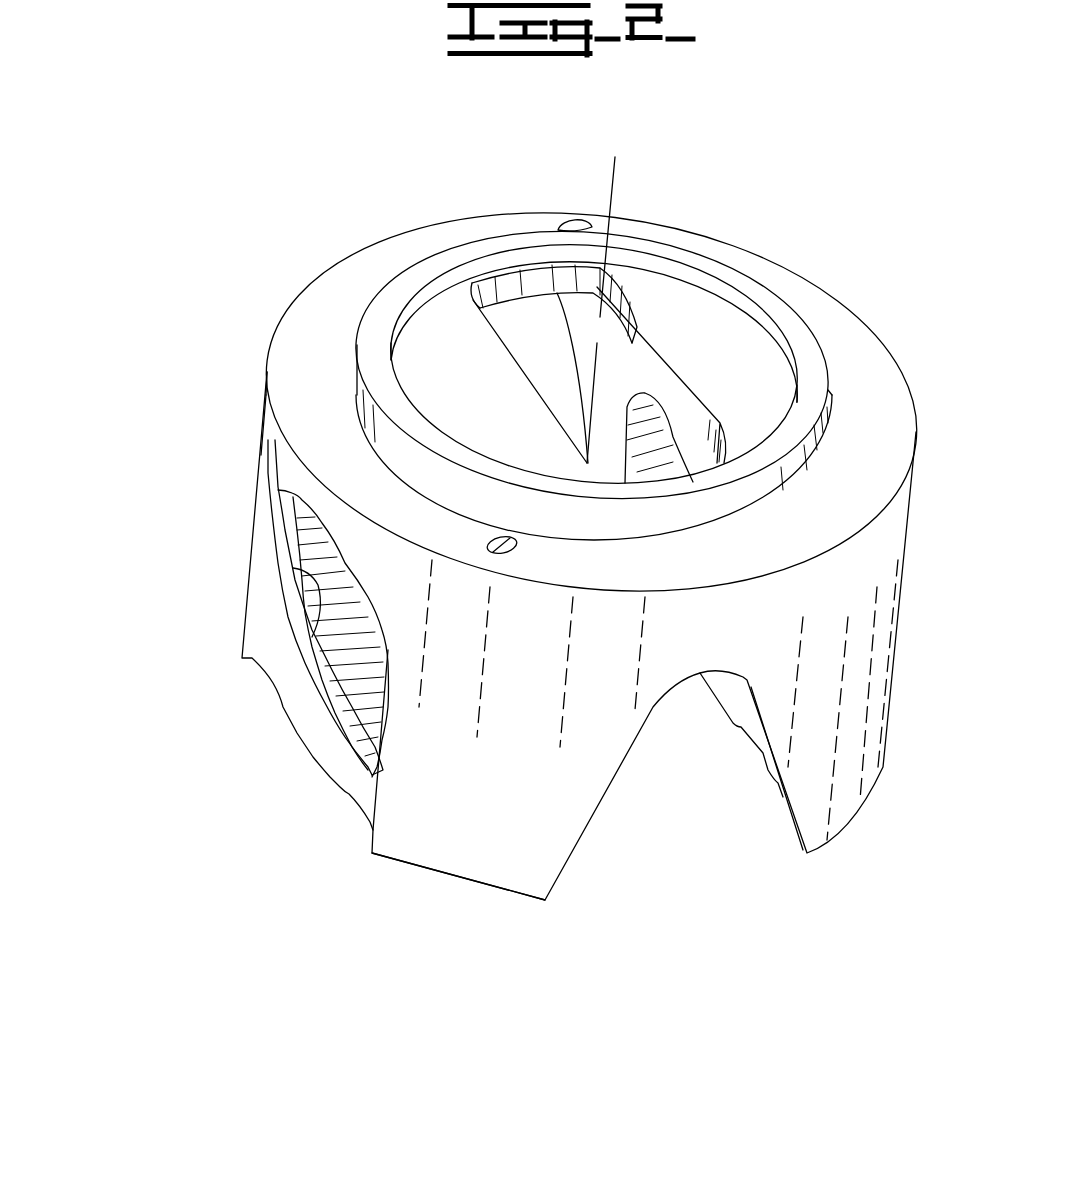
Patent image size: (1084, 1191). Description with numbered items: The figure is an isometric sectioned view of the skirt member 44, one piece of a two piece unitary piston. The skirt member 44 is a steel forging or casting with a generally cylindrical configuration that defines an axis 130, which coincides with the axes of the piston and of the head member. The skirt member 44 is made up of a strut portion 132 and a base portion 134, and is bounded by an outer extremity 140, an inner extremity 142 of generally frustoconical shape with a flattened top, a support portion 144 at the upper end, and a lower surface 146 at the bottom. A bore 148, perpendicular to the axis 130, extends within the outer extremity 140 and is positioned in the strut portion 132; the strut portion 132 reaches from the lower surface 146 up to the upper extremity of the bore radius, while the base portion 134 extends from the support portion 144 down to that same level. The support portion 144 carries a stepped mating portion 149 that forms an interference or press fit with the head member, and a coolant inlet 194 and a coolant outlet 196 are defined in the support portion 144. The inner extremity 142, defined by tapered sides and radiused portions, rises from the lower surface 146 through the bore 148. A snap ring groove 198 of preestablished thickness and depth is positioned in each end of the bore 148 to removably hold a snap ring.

The skirt member 44 is at (853, 262).
The axis 130 is at (613, 206).
The strut portion 132 is at (516, 733).
The base portion 134 is at (278, 333).
The outer extremity 140 is at (262, 420).
The inner extremity 142 is at (572, 377).
The support portion 144 is at (283, 370).
The lower surface 146 is at (483, 890).
The bore 148 is at (359, 695).
The mating portion 149 is at (382, 337).
The coolant inlet 194 is at (517, 545).
The coolant outlet 196 is at (560, 228).
The snap ring groove 198 is at (312, 637).